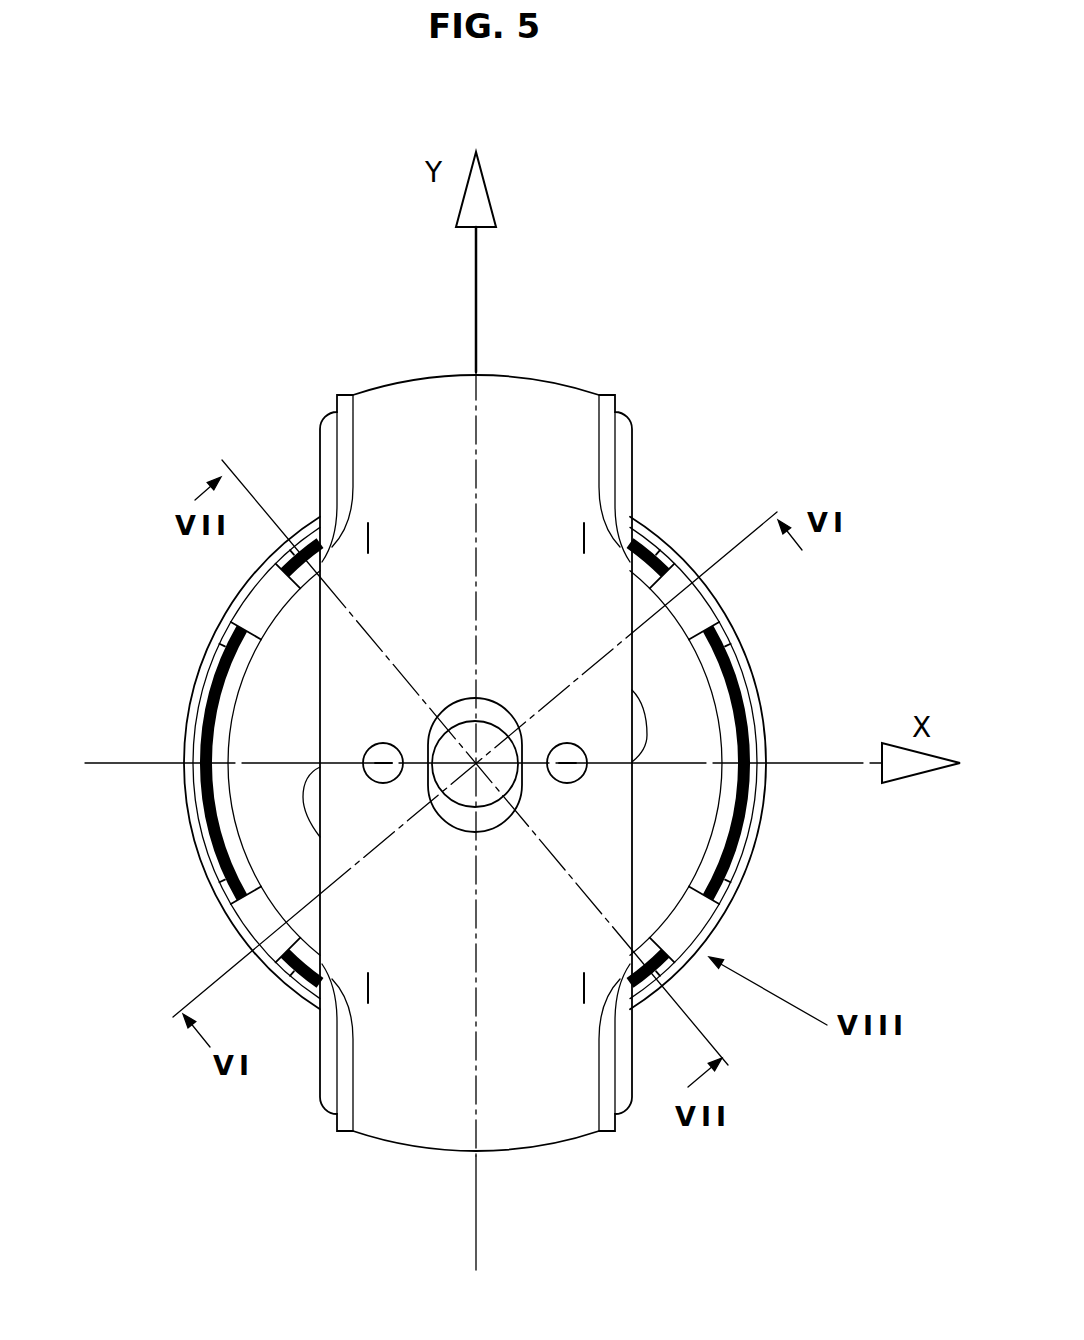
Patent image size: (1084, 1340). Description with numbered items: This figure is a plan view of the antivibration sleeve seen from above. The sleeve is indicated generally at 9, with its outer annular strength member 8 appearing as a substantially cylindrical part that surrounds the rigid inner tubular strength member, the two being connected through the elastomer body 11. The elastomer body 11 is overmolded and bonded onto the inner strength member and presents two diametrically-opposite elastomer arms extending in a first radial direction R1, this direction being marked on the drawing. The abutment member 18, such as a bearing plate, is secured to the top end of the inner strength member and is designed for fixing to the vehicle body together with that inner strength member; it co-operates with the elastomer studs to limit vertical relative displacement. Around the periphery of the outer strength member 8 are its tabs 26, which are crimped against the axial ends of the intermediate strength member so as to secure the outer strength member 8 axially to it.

The outer annular strength member 8 is at (747, 682).
The joint assembly 9 is at (663, 495).
The elastomer body 11 is at (657, 813).
The abutment member 18 is at (545, 398).
The tabs 26 is at (253, 603).
The first radial direction R1 is at (743, 540).